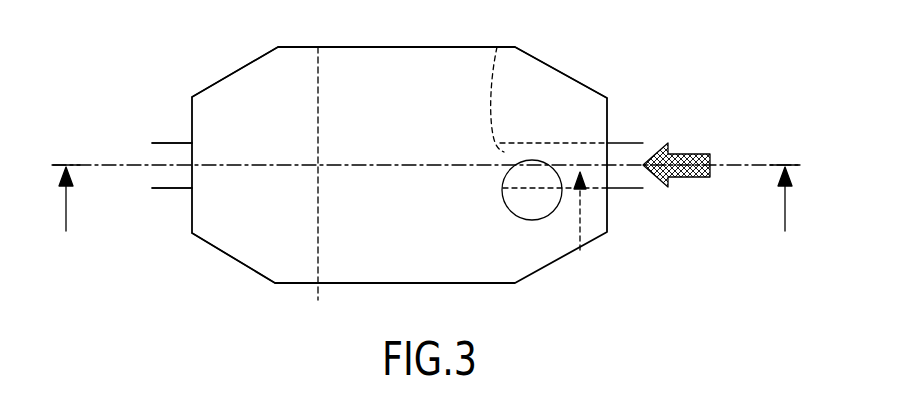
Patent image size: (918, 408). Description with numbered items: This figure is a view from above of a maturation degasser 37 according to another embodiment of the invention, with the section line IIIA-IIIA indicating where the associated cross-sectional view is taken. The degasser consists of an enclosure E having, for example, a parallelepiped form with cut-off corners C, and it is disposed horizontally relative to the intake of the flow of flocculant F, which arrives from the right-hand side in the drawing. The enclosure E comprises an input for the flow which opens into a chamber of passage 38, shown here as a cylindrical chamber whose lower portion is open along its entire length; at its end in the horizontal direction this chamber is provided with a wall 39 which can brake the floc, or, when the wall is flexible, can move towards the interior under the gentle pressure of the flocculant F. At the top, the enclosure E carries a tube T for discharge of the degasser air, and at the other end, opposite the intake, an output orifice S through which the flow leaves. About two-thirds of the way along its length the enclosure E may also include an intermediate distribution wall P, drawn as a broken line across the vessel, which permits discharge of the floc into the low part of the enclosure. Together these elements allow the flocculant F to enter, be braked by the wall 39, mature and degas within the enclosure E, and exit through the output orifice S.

The maturation degasser 37 is at (585, 80).
The chamber of passage 38 is at (581, 253).
The wall 39 is at (495, 42).
The cut-off corners C is at (213, 80).
The output orifice S is at (172, 142).
The enclosure E is at (231, 258).
The intermediate distribution wall P is at (322, 296).
The tube T is at (533, 220).
The flow of flocculant F is at (688, 152).
The section line IIIA- IIIA is at (439, 205).